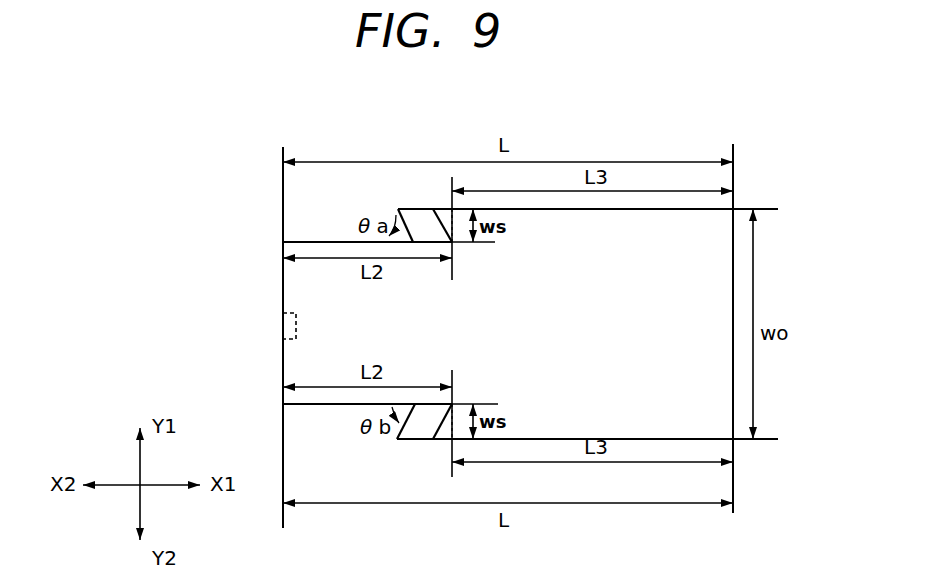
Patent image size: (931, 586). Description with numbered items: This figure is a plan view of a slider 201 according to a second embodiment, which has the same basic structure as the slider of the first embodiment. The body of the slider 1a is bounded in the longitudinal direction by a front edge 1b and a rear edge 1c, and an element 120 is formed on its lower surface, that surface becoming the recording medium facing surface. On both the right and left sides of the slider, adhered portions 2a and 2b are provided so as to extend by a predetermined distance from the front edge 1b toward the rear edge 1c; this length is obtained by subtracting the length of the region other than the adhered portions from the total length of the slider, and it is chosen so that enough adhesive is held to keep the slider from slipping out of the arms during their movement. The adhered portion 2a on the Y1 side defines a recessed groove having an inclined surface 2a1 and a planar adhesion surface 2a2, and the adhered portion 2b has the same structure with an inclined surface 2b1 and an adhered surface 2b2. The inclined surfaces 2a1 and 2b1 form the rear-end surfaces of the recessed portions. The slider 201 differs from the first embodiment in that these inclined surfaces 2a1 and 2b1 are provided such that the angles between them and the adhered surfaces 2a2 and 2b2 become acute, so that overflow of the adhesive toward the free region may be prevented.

The slider 201 is at (232, 183).
The substrate body 1a is at (313, 300).
The front edge 1b is at (283, 265).
The rear edge 1c is at (733, 283).
The element 120 is at (280, 337).
The adhered portion 2a is at (357, 156).
The inclined surface 2a1 is at (423, 224).
The planar adhesion surface 2a2 is at (326, 243).
The adhered portion 2b is at (352, 487).
The inclined surface 2b1 is at (425, 420).
The adhered surface 2b2 is at (323, 407).